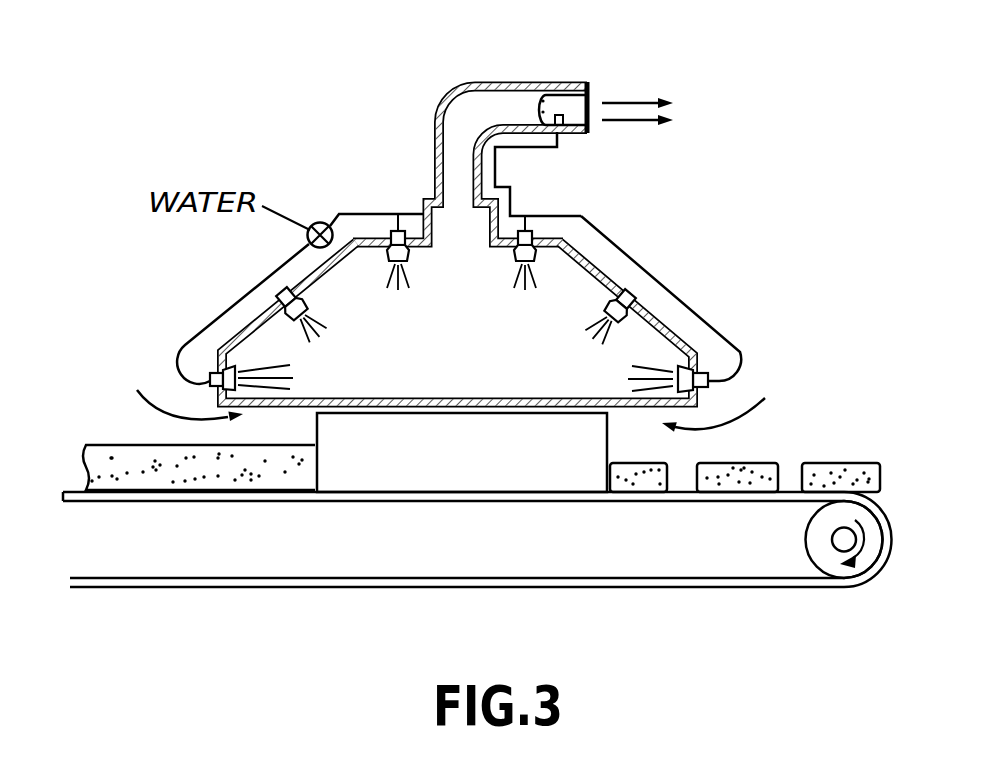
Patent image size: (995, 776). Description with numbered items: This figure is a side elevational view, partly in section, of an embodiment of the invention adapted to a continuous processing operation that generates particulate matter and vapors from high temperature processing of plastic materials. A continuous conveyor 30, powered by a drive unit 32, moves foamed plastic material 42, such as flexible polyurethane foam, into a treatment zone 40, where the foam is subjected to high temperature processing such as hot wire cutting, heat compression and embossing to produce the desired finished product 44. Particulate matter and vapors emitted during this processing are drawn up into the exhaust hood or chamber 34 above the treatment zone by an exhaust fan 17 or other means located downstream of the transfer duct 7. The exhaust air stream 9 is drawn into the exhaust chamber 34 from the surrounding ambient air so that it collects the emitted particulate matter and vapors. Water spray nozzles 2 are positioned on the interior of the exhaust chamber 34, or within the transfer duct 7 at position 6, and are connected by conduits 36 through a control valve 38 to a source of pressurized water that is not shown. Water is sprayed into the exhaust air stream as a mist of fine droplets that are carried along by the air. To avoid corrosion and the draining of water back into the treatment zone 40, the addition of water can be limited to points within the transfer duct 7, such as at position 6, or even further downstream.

The water spray nozzles 2 is at (258, 322).
The position 6 is at (557, 132).
The transfer duct 7 is at (500, 105).
The exhaust air stream 9 is at (631, 122).
The exhaust fan 17 is at (592, 90).
The continuous conveyor 30 is at (637, 589).
The drive unit 32 is at (820, 559).
The exhaust hood or chamber 34 is at (557, 297).
The conduits 36 is at (640, 285).
The control valve 38 is at (325, 222).
The treatment zone 40 is at (408, 476).
The foamed plastic material 42 is at (112, 450).
The finished product 44 is at (812, 462).